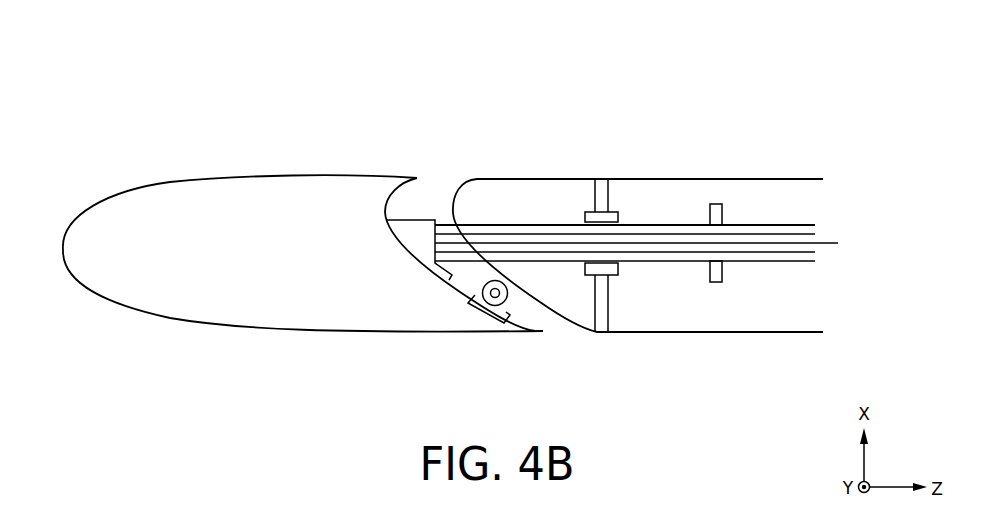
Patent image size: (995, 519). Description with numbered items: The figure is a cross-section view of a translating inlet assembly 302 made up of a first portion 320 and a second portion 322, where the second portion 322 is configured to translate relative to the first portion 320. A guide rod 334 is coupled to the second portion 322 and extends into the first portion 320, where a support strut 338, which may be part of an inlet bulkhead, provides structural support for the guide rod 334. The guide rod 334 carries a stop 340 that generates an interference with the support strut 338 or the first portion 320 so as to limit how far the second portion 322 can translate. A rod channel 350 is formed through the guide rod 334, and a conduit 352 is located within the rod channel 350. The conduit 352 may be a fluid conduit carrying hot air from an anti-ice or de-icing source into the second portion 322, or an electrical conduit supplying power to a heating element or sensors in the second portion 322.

The translating inlet assembly 302 is at (228, 88).
The first portion 320 is at (715, 308).
The second portion 322 is at (313, 200).
The guide rod 334 is at (658, 265).
The support strut 338 is at (602, 200).
The stop 340 is at (715, 203).
The rod channel 350 is at (777, 243).
The conduit 352 is at (830, 243).